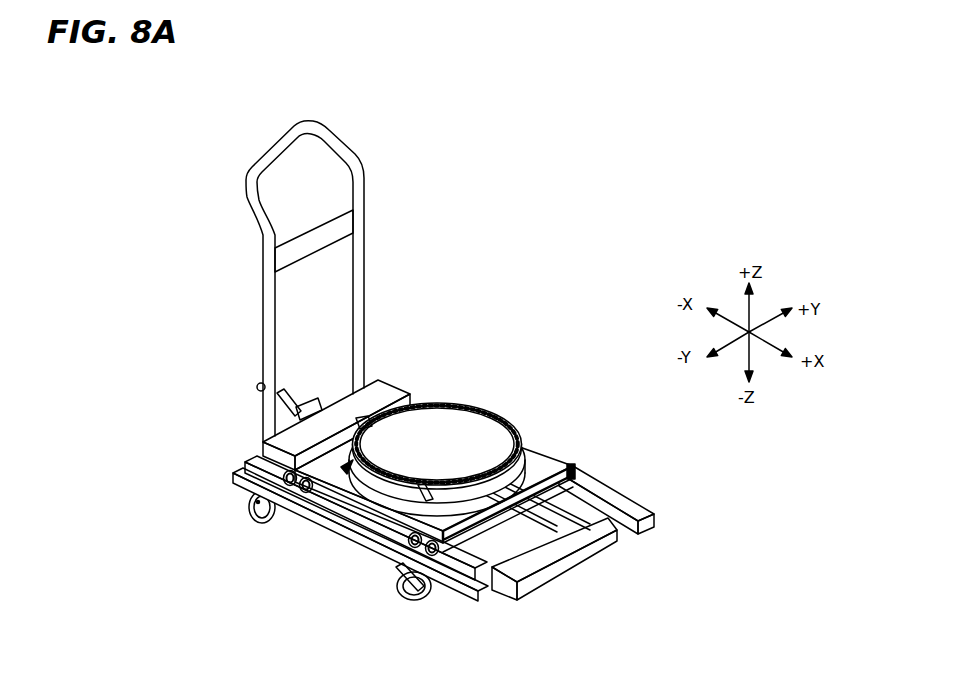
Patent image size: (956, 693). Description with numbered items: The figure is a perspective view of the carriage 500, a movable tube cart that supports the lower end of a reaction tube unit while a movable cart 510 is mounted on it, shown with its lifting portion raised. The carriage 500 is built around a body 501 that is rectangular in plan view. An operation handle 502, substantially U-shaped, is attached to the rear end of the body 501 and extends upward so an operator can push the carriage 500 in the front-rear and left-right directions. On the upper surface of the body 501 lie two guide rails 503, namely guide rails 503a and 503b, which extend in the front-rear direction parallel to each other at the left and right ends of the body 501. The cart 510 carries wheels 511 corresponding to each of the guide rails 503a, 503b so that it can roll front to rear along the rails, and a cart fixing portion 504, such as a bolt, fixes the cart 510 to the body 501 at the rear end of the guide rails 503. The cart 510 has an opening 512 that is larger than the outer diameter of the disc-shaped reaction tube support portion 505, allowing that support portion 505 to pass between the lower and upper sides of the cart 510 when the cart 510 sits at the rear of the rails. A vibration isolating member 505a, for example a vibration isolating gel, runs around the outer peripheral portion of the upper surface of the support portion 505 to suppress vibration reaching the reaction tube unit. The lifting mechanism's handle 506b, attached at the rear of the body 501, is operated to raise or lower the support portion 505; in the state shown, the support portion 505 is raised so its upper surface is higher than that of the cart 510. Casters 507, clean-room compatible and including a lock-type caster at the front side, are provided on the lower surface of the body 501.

The carriage 500 is at (175, 103).
The body 501 is at (377, 550).
The operation handle 502 is at (351, 164).
The guide rail 503 is at (612, 533).
The guide rail 503a is at (639, 524).
The guide rail 503b is at (527, 600).
The cart fixing portion 504 is at (398, 395).
The reaction tube support portion 505 is at (481, 440).
The vibration isolating member 505a is at (517, 433).
The handle 506b is at (256, 387).
The caster 507 is at (259, 519).
The cart 510 is at (558, 467).
The wheel 511 is at (302, 493).
The opening 512 is at (346, 472).